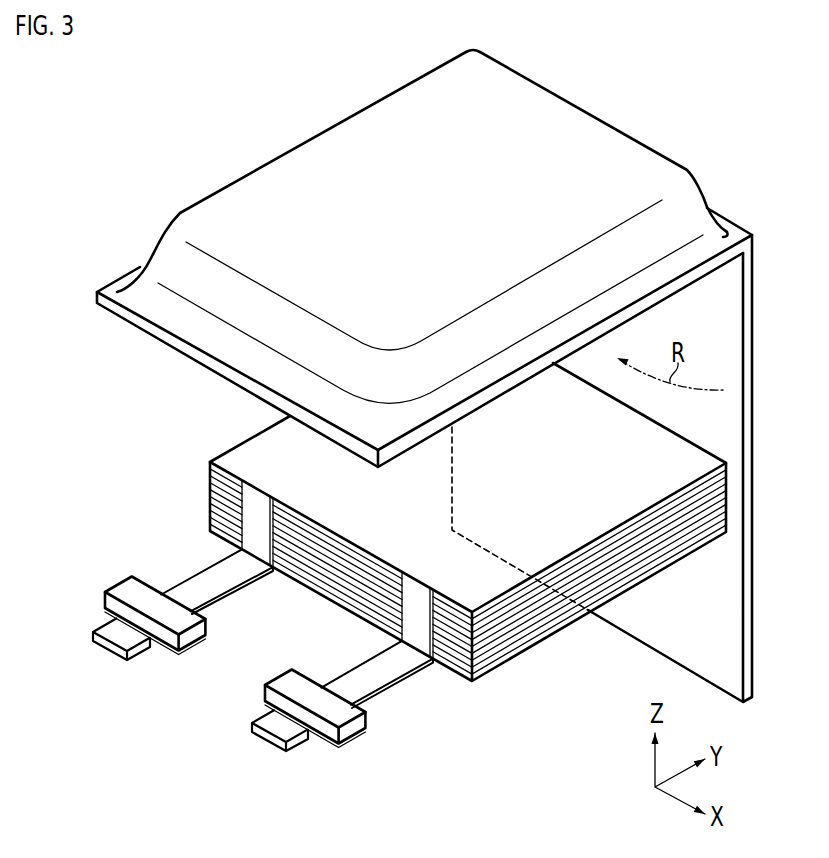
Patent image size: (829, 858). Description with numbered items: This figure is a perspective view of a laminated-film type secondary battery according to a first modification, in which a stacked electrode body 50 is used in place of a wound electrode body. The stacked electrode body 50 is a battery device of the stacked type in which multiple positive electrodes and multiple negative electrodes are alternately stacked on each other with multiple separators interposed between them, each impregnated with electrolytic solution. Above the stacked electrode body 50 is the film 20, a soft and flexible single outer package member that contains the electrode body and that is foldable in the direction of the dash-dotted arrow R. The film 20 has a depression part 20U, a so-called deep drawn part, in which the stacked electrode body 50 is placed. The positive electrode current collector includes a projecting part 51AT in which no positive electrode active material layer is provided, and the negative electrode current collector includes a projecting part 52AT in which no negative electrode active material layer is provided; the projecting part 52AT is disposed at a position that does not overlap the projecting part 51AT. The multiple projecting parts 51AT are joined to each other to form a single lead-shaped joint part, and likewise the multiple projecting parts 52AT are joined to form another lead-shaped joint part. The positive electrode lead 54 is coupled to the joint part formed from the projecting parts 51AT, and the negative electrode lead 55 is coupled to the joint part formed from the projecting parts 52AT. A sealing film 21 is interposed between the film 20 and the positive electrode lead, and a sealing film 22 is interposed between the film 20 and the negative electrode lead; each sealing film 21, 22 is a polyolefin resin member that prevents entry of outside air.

The film 20 is at (572, 127).
The depression part 20U is at (322, 160).
The sealing film 21 is at (130, 593).
The sealing film 22 is at (358, 738).
The stacked electrode body 50 is at (527, 665).
The projecting part 51AT is at (212, 578).
The projecting part 52AT is at (390, 670).
The positive electrode lead 54 is at (117, 630).
The negative electrode lead 55 is at (275, 723).